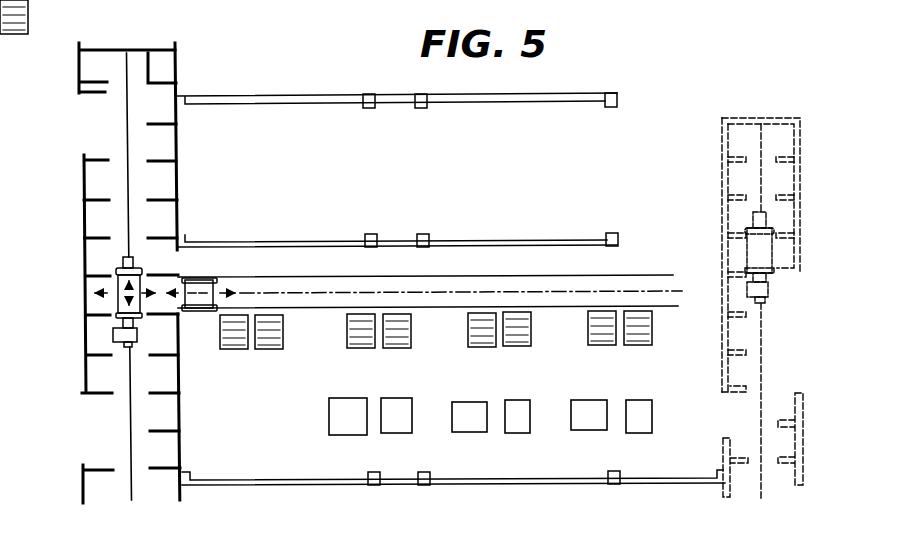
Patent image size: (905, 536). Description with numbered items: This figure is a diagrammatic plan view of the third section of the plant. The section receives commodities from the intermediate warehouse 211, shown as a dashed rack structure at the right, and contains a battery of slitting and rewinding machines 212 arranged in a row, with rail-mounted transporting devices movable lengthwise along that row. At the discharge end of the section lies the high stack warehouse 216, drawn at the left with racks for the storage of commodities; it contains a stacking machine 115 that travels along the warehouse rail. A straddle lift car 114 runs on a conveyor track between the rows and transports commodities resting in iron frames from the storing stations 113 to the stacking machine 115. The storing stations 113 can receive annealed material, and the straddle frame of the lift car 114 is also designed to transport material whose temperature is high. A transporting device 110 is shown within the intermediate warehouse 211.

The transfer car 110 is at (772, 255).
The storing stations 113 is at (653, 335).
The straddle lift car 114 is at (202, 278).
The stacking machine 115 is at (117, 300).
The intermediate warehouse 211 is at (783, 133).
The slitting and rewinding machines 212 is at (350, 398).
The high stack warehouse 216 is at (160, 450).